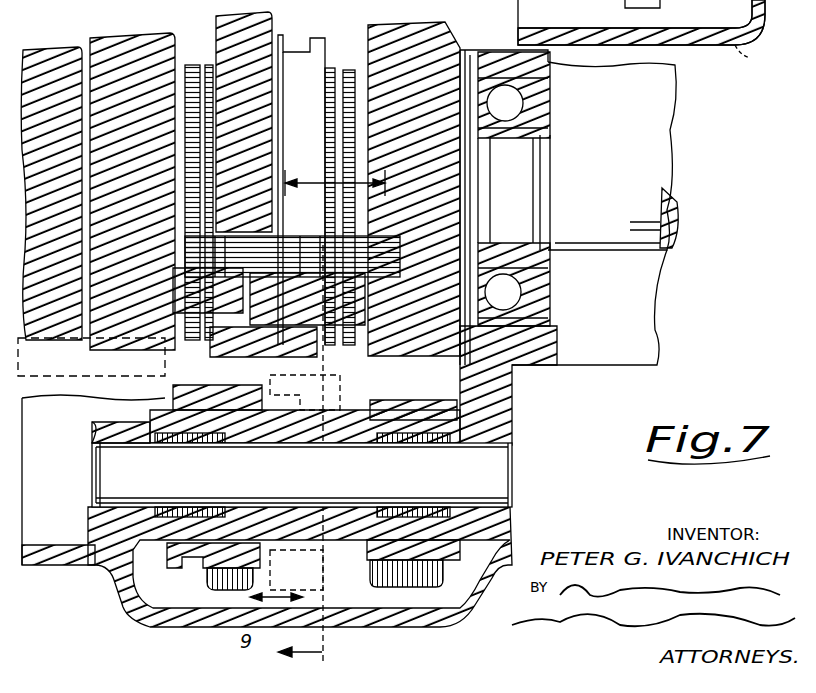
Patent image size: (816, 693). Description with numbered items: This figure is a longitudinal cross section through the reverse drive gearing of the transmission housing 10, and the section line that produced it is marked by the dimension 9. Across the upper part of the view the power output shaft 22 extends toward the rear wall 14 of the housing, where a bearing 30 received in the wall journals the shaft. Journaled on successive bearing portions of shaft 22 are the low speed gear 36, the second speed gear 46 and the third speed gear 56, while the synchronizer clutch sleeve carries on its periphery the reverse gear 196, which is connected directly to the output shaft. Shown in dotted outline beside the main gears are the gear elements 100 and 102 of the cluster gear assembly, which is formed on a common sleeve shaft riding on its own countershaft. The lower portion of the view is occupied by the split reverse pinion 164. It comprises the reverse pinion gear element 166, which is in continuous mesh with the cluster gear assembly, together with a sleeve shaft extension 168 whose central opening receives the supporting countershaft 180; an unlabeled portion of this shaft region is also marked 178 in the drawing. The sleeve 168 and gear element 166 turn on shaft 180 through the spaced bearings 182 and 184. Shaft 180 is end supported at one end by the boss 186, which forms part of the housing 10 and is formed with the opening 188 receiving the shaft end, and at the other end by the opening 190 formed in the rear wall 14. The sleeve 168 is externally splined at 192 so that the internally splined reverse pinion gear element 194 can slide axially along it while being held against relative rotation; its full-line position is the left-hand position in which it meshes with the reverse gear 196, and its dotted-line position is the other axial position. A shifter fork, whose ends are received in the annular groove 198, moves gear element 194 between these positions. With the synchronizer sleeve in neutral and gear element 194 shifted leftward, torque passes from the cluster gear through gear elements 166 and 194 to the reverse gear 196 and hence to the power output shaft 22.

The axial clearance dimension 9 is at (335, 172).
The transmission housing 10 is at (95, 575).
The rear wall 14 is at (512, 418).
The power output shaft 22 is at (625, 158).
The bearing 30 is at (550, 108).
The low speed gear 36 is at (458, 48).
The second speed gear 46 is at (188, 24).
The third speed gear 56 is at (62, 44).
The gear element 100 is at (91, 357).
The gear element 102 is at (210, 345).
The split reverse pinion 164 is at (332, 440).
The reverse pinion gear element 166 is at (428, 632).
The sleeve shaft extension 168 is at (300, 440).
The shaft portion 178 is at (213, 471).
The supporting countershaft 180 is at (100, 462).
The bearing 182 is at (396, 440).
The bearing 184 is at (170, 443).
The boss 186 is at (98, 424).
The opening 188 is at (100, 445).
The opening 190 is at (508, 500).
The external splines 192 is at (255, 520).
The reverse pinion gear element 194 is at (243, 580).
The reverse gear 196 is at (275, 30).
The annular groove 198 is at (641, 22).